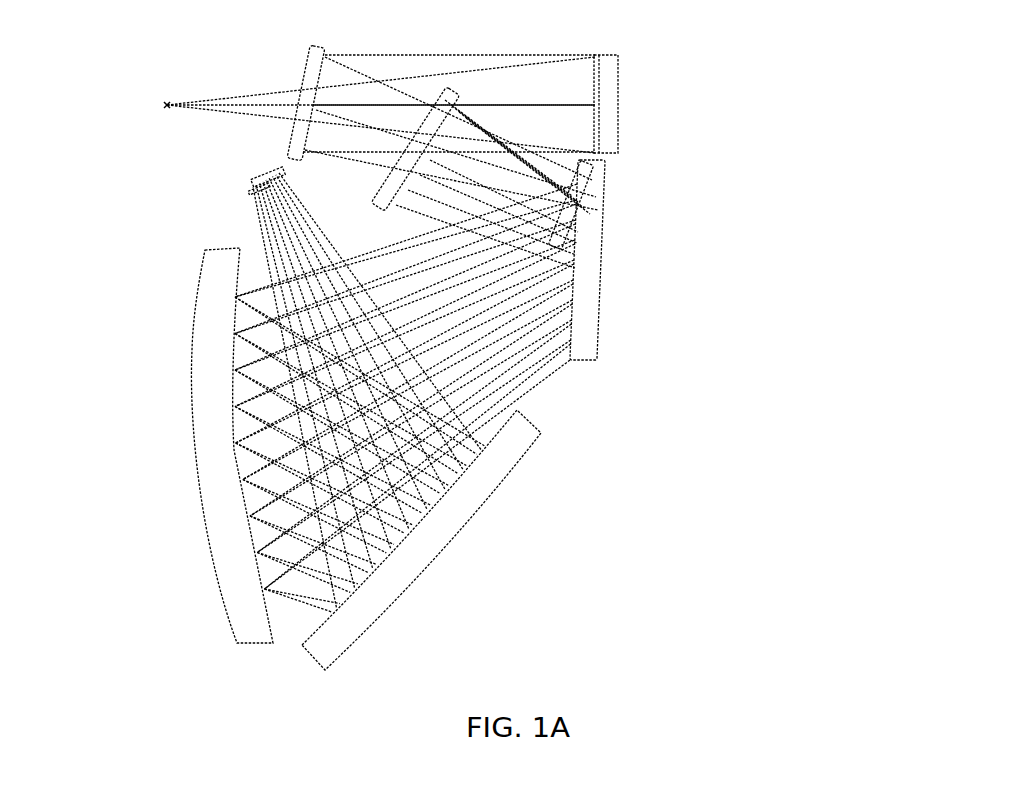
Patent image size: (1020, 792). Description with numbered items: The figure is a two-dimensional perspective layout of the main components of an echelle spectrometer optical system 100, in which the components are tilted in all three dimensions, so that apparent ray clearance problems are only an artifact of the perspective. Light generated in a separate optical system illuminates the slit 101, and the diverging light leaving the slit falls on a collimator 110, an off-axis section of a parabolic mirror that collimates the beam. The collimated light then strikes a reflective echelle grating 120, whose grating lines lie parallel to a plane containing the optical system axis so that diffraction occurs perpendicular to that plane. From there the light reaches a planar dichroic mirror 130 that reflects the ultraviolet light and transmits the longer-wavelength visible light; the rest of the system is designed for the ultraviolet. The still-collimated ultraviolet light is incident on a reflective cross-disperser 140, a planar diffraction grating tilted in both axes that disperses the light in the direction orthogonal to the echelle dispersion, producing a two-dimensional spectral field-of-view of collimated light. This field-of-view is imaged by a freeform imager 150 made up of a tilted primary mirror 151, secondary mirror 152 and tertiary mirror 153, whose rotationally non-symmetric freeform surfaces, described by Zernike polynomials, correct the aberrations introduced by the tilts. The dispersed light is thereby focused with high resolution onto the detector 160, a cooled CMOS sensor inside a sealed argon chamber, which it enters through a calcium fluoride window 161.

The echelle spectrometer optical system 100 is at (120, 33).
The slit 101 is at (116, 103).
The collimator 110 is at (618, 89).
The echelle grating 120 is at (305, 73).
The dichroic mirror 130 is at (598, 181).
The cross-disperser 140 is at (432, 168).
The freeform imager 150 is at (622, 452).
The primary mirror 151 is at (610, 274).
The secondary mirror 152 is at (235, 463).
The tertiary mirror 153 is at (463, 470).
The detector 160 is at (247, 172).
The window 161 is at (242, 197).